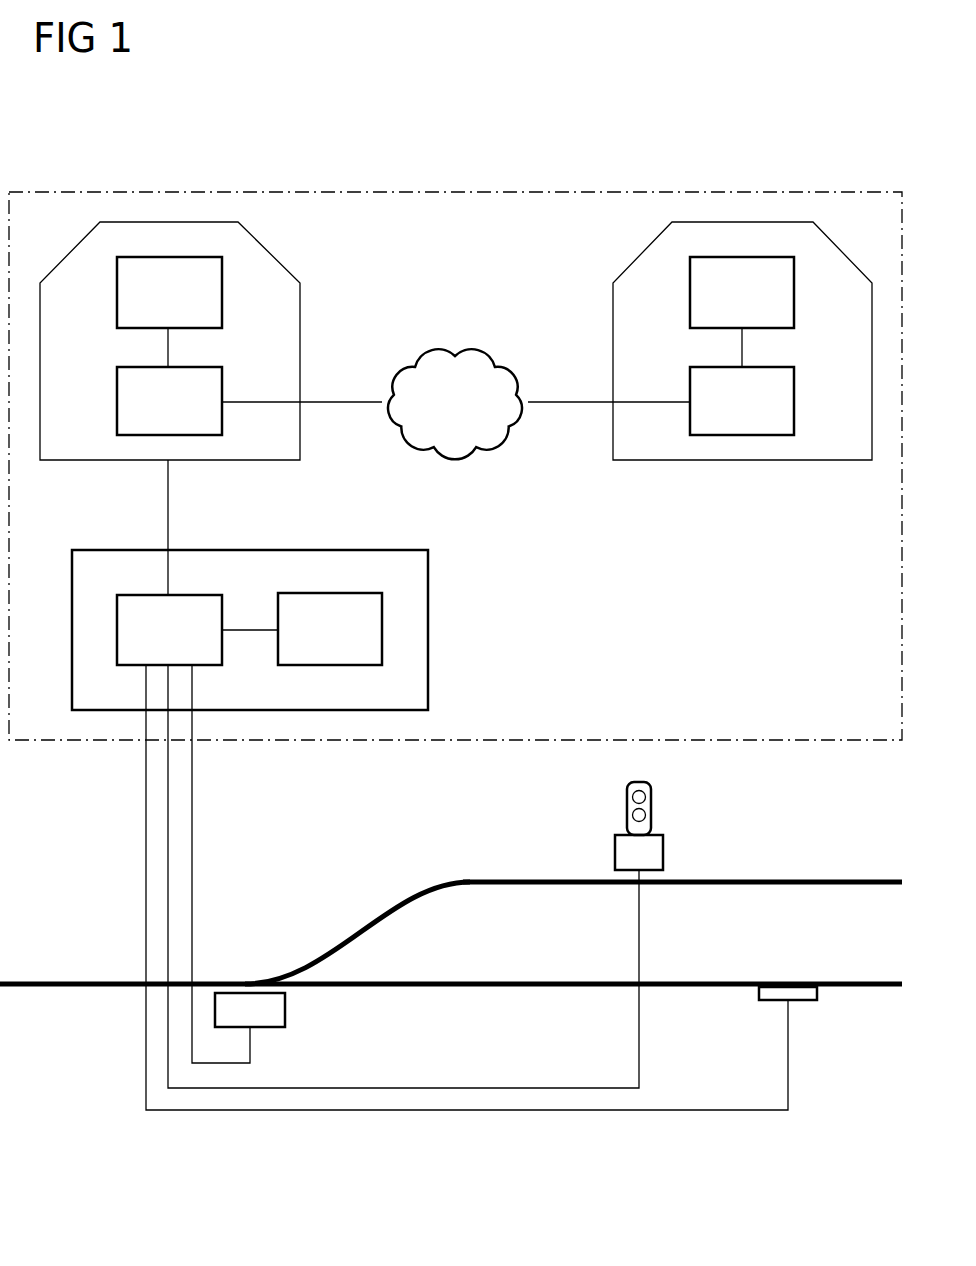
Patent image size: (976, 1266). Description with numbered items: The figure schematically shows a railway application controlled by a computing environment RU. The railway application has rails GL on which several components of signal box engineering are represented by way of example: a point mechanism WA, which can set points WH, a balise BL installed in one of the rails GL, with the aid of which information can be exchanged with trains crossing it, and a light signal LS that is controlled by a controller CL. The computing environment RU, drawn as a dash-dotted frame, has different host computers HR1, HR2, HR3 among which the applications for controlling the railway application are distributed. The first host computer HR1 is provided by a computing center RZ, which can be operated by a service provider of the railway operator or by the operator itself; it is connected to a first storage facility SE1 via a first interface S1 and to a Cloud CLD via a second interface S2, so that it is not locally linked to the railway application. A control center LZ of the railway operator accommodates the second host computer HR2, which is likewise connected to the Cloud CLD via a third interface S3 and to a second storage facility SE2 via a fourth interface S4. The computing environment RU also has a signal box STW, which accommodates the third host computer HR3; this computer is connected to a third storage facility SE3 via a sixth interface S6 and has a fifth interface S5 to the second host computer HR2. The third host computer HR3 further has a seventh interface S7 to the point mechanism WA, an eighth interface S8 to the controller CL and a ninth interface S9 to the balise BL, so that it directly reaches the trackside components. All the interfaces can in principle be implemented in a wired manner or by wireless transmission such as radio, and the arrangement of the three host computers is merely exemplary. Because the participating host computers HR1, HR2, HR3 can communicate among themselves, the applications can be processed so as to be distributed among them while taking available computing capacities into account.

The computing environment RU is at (468, 192).
The control center LZ is at (272, 244).
The computing center RZ is at (640, 246).
The Cloud CLD is at (455, 345).
The first storage facility SE1 is at (742, 292).
The second storage facility SE2 is at (169, 292).
The third storage facility SE3 is at (330, 629).
The first host computer HR1 is at (742, 401).
The second host computer HR2 is at (169, 401).
The third host computer HR3 is at (169, 630).
The first interface S1 is at (744, 347).
The second interface S2 is at (570, 400).
The third interface S3 is at (340, 400).
The fourth interface S4 is at (166, 347).
The fifth interface S5 is at (169, 504).
The sixth interface S6 is at (249, 629).
The seventh interface S7 is at (190, 810).
The eighth interface S8 is at (166, 855).
The ninth interface S9 is at (144, 898).
The signal box STW is at (428, 628).
The rails GL is at (512, 880).
The points WH is at (246, 970).
The point mechanism WA is at (286, 1012).
The light signal LS is at (652, 800).
The controller CL is at (664, 852).
The balise BL is at (802, 1003).